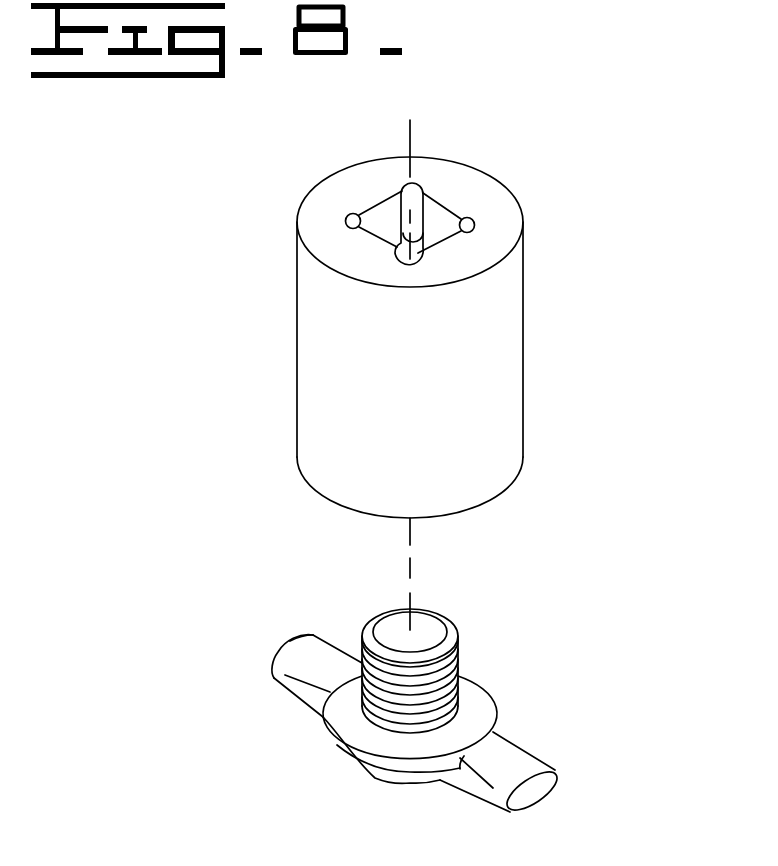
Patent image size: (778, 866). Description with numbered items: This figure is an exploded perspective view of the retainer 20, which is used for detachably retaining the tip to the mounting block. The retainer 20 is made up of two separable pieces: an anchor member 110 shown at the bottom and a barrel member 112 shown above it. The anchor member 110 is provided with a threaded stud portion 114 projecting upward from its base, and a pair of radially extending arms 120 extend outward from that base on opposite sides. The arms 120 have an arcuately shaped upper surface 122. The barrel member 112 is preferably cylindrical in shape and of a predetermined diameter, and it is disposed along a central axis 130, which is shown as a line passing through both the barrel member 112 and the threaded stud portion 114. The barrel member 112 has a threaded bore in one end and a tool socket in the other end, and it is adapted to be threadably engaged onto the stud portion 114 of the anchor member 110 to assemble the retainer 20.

The retainer 20 is at (208, 391).
The anchor member 110 is at (367, 787).
The barrel member 112 is at (285, 270).
The threaded stud portion 114 is at (459, 655).
The arms 120 is at (288, 673).
The upper surface 122 is at (318, 648).
The central axis 130 is at (414, 148).